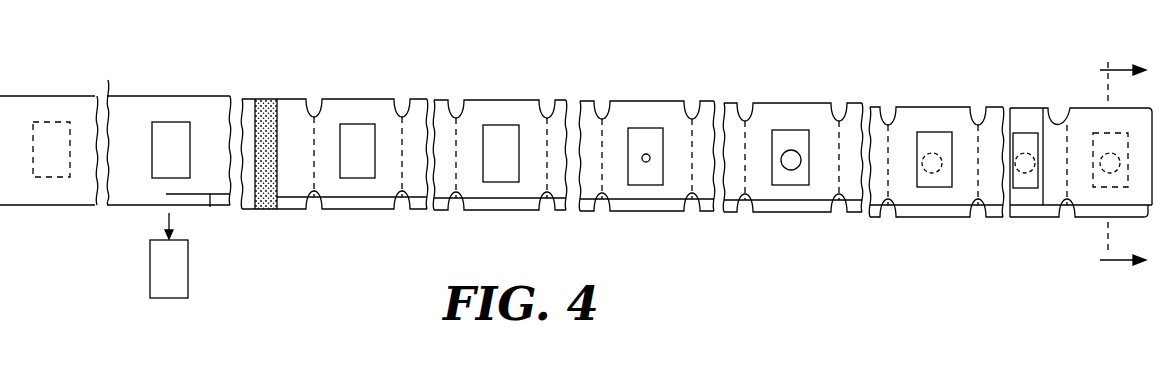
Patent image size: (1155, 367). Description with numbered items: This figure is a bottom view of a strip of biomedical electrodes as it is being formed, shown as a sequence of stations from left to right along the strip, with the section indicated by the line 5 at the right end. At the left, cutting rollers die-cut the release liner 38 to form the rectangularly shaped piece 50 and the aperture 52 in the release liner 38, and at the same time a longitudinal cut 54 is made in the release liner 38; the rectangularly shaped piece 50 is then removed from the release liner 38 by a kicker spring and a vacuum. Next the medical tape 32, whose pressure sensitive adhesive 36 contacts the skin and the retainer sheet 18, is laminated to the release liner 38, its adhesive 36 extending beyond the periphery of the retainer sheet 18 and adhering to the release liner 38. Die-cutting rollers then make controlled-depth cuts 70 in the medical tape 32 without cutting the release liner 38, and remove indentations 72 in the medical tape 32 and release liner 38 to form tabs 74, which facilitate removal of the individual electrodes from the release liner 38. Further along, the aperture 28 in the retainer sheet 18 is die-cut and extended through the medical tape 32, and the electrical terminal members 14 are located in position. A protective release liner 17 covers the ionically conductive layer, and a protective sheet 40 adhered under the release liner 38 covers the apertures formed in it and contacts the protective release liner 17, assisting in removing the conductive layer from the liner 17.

The release liner 38 is at (88, 96).
The aperture 52 is at (168, 128).
The longitudinal cut 54 is at (210, 207).
The rectangularly shaped piece 50 is at (150, 290).
The medical tape 32 is at (251, 99).
The pressure sensitive adhesive 36 is at (262, 209).
The controlled-depth cut 70 is at (455, 118).
The indentation 72 is at (400, 112).
The tab 74 is at (372, 210).
The retainer sheet 18 is at (500, 128).
The aperture 28 is at (649, 154).
The electrical terminal member 14 is at (793, 146).
The protective release liner 17 is at (946, 135).
The protective sheet 40 is at (1049, 114).
The section line 5 is at (1106, 173).